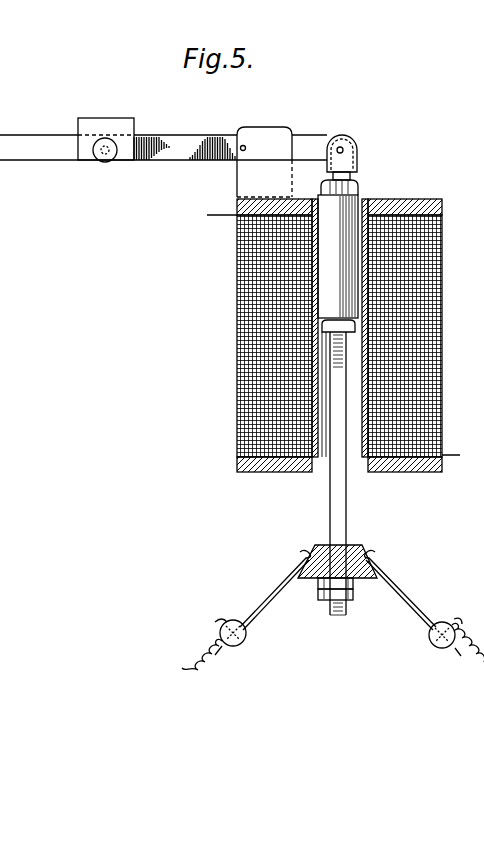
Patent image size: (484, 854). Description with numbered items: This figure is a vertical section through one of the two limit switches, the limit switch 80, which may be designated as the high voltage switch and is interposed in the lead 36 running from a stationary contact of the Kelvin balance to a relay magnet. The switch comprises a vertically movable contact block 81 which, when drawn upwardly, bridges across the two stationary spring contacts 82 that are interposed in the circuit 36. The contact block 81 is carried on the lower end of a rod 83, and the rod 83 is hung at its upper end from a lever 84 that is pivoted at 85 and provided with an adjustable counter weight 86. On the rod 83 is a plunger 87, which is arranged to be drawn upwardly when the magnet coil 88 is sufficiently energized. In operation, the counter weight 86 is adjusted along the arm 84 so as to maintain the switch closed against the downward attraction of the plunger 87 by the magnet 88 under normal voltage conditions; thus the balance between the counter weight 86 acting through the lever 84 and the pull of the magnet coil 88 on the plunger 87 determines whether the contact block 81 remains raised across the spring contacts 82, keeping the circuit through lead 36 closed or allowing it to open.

The lead 36 is at (319, 650).
The limit switch 80 is at (337, 634).
The contact block 81 is at (349, 548).
The stationary spring contacts 82 is at (280, 573).
The rod 83 is at (346, 503).
The lever 84 is at (175, 147).
The pivot 85 is at (245, 146).
The adjustable counter weight 86 is at (95, 125).
The plunger 87 is at (348, 213).
The magnet coil 88 is at (260, 320).